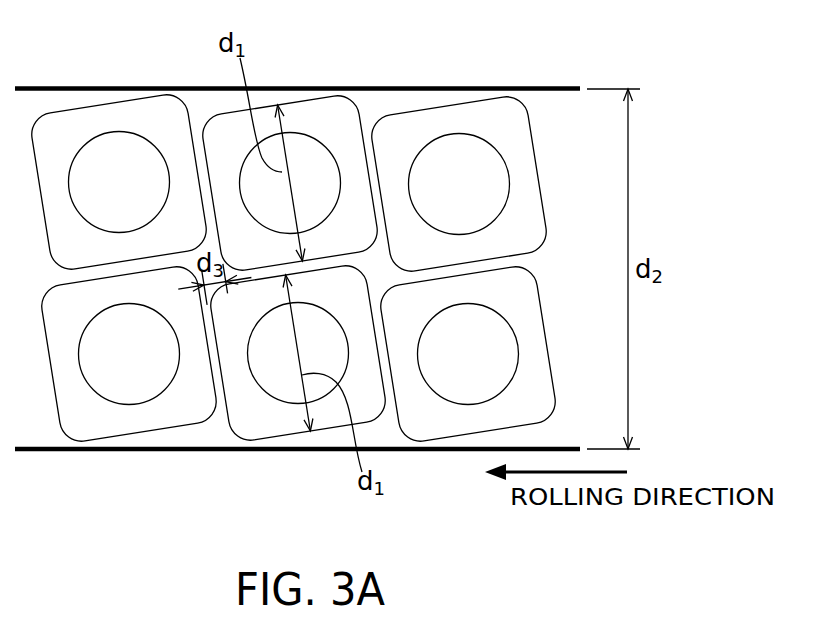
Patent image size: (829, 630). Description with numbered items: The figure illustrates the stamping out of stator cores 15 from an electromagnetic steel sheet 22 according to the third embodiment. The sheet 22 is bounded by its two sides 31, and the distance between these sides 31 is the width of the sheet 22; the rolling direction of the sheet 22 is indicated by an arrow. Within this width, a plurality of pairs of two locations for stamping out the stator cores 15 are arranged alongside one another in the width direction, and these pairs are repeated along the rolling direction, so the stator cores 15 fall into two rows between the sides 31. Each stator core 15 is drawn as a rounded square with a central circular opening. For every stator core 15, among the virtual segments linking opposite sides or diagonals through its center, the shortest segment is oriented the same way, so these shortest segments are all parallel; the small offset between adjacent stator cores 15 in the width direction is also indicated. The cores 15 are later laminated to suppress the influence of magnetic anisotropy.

The stator core 15 is at (135, 118).
The electromagnetic steel sheet 22 is at (297, 270).
The side of the electromagnetic steel sheet 31 is at (50, 87).